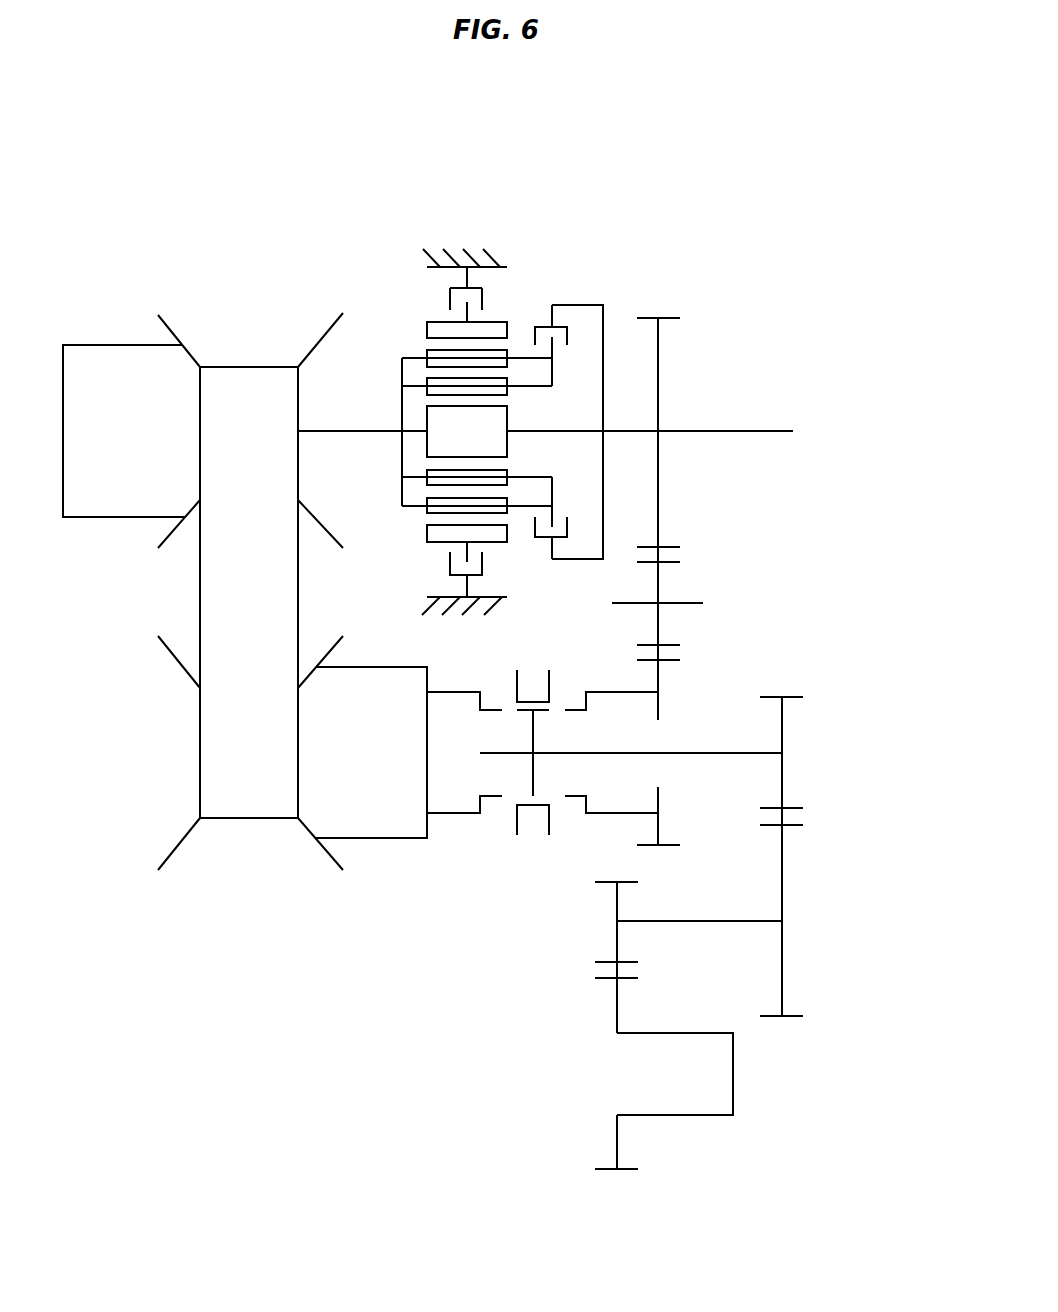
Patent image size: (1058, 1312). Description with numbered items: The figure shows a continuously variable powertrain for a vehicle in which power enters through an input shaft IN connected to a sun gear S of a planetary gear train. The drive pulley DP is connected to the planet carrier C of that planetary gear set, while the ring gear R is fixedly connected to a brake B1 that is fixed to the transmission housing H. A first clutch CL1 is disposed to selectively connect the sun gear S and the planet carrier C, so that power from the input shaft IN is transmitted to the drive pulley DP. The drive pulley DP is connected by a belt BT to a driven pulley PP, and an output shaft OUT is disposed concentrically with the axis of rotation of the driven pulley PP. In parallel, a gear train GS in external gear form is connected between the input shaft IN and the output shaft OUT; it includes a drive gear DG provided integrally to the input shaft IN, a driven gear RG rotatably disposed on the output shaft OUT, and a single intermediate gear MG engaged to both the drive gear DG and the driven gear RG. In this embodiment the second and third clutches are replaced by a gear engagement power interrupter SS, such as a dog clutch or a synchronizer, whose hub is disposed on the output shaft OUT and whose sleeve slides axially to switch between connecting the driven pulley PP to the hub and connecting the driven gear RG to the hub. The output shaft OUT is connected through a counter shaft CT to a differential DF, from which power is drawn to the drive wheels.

The drive pulley DP is at (170, 332).
The belt BT is at (212, 586).
The driven pulley PP is at (175, 845).
The input shaft IN is at (760, 431).
The transmission housing H is at (458, 260).
The brake B1 is at (447, 296).
The ring gear R is at (428, 323).
The planet carrier C is at (402, 373).
The sun gear S is at (433, 441).
The first clutch CL1 is at (540, 318).
The drive gear DG is at (668, 547).
The intermediate gear MG is at (668, 645).
The driven gear RG is at (668, 660).
The gear train GS is at (862, 522).
The output shaft OUT is at (743, 753).
The gear engagement power interrupter SS is at (530, 836).
The counter shaft CT is at (782, 921).
The differential DF is at (733, 1079).